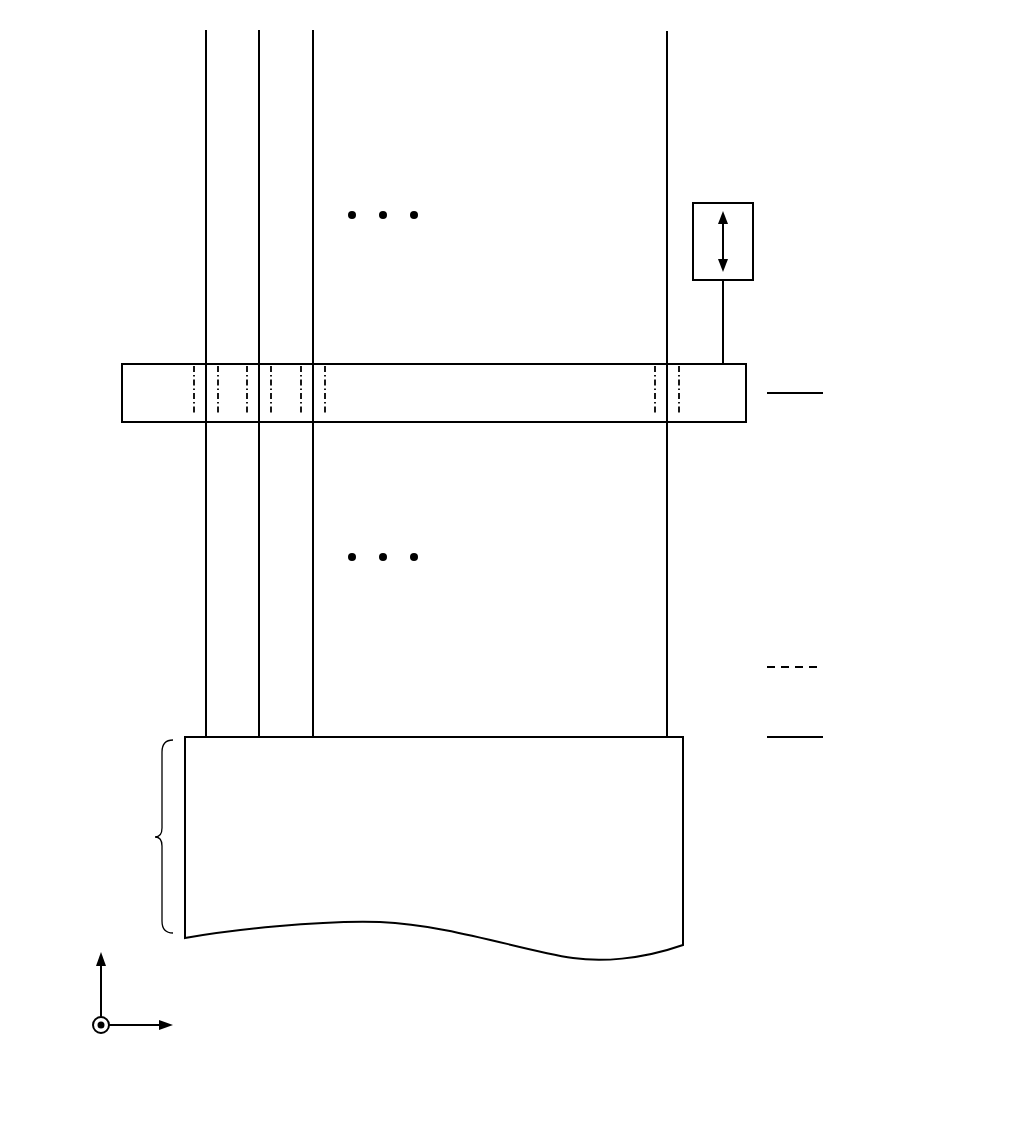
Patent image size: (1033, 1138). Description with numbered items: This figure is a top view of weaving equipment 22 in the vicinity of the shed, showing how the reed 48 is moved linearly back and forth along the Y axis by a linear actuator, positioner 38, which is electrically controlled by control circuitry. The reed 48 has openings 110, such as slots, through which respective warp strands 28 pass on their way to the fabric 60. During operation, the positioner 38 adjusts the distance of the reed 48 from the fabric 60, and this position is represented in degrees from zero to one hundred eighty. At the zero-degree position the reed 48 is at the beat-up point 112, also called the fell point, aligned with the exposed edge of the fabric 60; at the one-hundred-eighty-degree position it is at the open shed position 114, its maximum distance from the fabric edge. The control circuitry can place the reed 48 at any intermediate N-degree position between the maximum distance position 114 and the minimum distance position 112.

The weaving equipment 22 is at (776, 62).
The warp strands 28 is at (259, 66).
The positioner 38 is at (753, 232).
The reed 48 is at (135, 394).
The fabric 60 is at (150, 836).
The openings 110 is at (194, 410).
The beat-up point 112 is at (176, 731).
The open shed position 114 is at (101, 384).